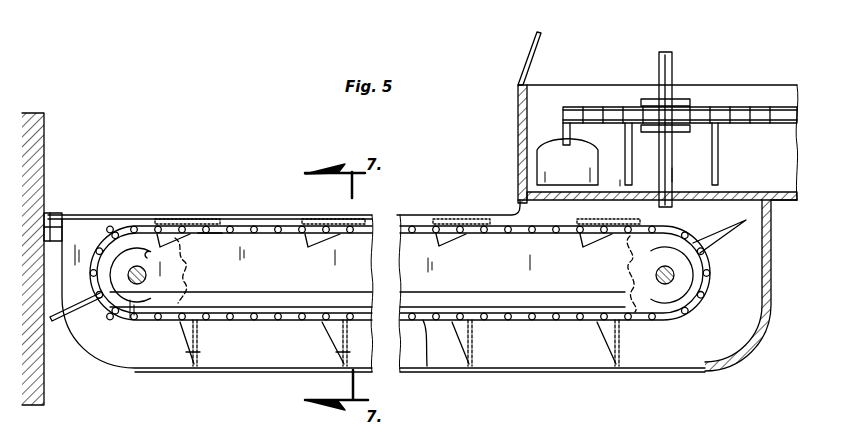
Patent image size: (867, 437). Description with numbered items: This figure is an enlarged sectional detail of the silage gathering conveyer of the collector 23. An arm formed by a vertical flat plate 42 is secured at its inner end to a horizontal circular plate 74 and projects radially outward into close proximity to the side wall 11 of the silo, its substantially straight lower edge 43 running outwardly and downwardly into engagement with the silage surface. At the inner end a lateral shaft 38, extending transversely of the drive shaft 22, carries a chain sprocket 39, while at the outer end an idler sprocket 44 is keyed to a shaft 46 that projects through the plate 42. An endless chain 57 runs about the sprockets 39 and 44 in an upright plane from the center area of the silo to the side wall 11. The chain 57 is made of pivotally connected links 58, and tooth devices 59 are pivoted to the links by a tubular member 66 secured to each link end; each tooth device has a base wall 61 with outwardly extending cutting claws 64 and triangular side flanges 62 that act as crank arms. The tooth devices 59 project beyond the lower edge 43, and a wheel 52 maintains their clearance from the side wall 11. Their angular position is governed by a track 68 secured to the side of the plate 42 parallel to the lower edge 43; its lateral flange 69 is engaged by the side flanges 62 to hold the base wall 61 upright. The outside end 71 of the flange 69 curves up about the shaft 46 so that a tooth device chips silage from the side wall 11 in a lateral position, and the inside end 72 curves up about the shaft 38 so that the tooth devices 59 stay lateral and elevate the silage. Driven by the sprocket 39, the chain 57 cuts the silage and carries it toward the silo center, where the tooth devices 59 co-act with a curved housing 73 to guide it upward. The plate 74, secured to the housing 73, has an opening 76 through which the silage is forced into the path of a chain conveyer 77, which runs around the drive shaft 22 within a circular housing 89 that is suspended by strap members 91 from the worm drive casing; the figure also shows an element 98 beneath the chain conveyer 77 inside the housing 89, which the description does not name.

The side wall 11 is at (44, 150).
The drive shaft 22 is at (673, 55).
The collector 23 is at (297, 148).
The lateral shaft 38 is at (670, 284).
The chain sprocket 39 is at (625, 263).
The flat plate 42 is at (90, 225).
The lower edge 43 is at (513, 372).
The idler sprocket 44 is at (195, 270).
The shaft 46 is at (132, 284).
The wheel 52 is at (62, 213).
The endless chain 57 is at (410, 222).
The links 58 is at (214, 233).
The tooth devices 59 is at (200, 219).
The base wall 61 is at (198, 348).
The side flange 62 is at (193, 340).
The cutting claws 64 is at (52, 320).
The tubular member 66 is at (310, 233).
The track 68 is at (445, 298).
The lateral flange 69 is at (423, 322).
The outside end 71 is at (118, 254).
The inside end 72 is at (700, 268).
The curved housing 73 is at (771, 270).
The horizontal circular plate 74 is at (776, 200).
The opening 76 is at (740, 192).
The chain conveyer 77 is at (745, 107).
The circular housing 89 is at (518, 138).
The strap members 91 is at (525, 55).
The bucket 98 is at (555, 135).